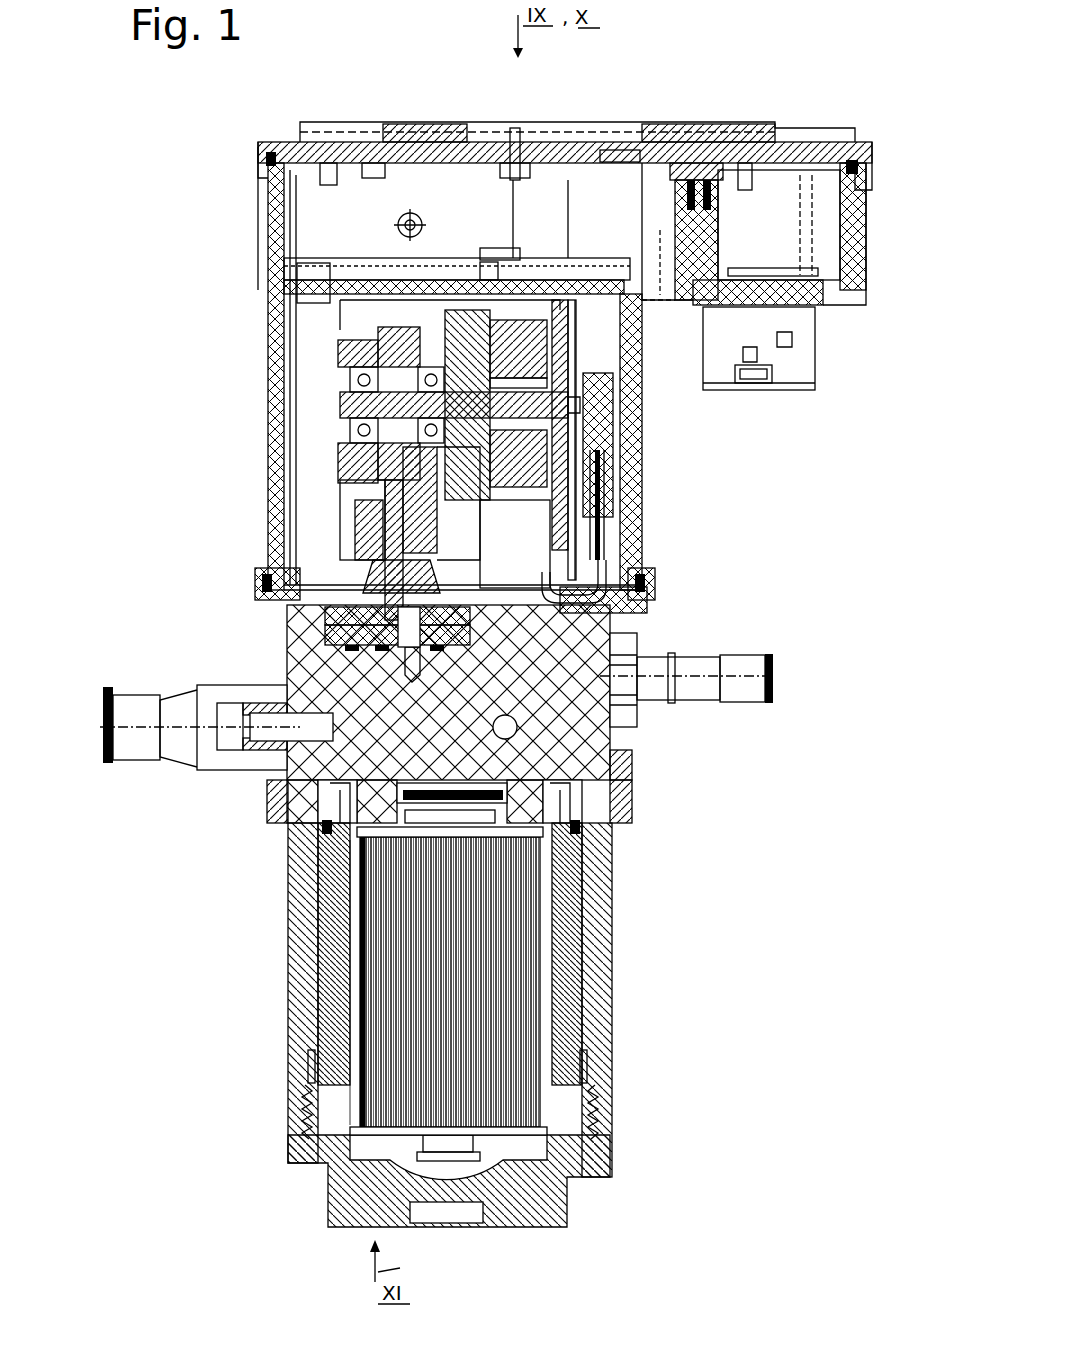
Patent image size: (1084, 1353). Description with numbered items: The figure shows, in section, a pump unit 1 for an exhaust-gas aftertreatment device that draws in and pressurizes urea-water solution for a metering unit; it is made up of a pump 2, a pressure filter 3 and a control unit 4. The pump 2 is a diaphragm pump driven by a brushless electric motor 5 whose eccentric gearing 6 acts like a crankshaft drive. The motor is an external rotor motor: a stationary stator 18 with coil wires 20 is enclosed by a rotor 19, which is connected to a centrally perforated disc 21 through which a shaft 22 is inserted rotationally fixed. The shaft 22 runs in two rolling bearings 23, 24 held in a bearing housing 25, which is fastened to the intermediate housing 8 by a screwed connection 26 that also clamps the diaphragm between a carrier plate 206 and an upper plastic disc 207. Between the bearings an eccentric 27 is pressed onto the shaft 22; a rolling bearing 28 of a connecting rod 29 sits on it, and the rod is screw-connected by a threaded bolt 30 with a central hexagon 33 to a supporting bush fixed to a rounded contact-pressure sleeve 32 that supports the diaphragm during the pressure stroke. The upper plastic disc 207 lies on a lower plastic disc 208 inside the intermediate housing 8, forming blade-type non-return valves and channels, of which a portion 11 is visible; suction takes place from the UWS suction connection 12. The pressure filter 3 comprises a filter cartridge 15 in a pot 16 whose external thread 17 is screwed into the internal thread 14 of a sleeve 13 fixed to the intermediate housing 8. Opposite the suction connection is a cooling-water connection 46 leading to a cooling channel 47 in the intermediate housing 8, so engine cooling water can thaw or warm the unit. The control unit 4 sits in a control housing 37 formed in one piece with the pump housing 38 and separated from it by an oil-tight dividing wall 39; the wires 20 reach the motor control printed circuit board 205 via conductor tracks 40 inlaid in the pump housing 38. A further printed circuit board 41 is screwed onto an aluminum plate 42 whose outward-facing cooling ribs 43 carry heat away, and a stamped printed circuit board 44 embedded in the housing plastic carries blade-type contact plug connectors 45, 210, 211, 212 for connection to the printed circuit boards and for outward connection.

The pump unit 1 is at (878, 757).
The pump 2 is at (292, 480).
The pressure filter 3 is at (340, 1021).
The control unit 4 is at (612, 212).
The electric motor 5 is at (527, 535).
The eccentric gearing 6 is at (345, 514).
The intermediate housing 8 is at (598, 743).
The portion of channel 11 is at (405, 667).
The UWS suction connection 12 is at (760, 700).
The sleeve 13 is at (595, 975).
The internal thread 14 is at (585, 1132).
The filter cartridge 15 is at (485, 1048).
The pot 16 is at (565, 953).
The external thread 17 is at (290, 1110).
The stator 18 is at (600, 442).
The rotor 19 is at (612, 345).
The wires 20 is at (600, 548).
The centrally perforated disc 21 is at (612, 470).
The shaft 22 is at (600, 388).
The rolling bearing 23 is at (345, 358).
The rolling bearing 24 is at (345, 380).
The bearing housing 25 is at (345, 448).
The screwed connection 26 is at (352, 557).
The eccentric 27 is at (378, 470).
The rolling bearing 28 is at (352, 520).
The connecting rod 29 is at (596, 506).
The threaded bolt 30 is at (375, 530).
The contact-pressure sleeve 32 is at (320, 625).
The central hexagon 33 is at (615, 633).
The control housing 37 is at (268, 213).
The pump housing 38 is at (632, 470).
The dividing wall 39 is at (330, 300).
The conductor tracks 40 is at (600, 413).
The further printed circuit board 41 is at (447, 160).
The aluminum plate 42 is at (756, 157).
The cooling ribs 43 is at (349, 132).
The stamped printed circuit board 44 is at (787, 292).
The contact plug connector 45 is at (717, 193).
The cooling-water connection 46 is at (135, 745).
The cooling channel 47 is at (516, 733).
The motor control printed circuit board 205 is at (383, 257).
The carrier plate 206 is at (345, 590).
The upper plastic disc 207 is at (360, 640).
The lower plastic disc 208 is at (615, 650).
The contact plug connector 210 is at (621, 158).
The contact plug connector 211 is at (750, 365).
The contact plug connector 212 is at (778, 342).